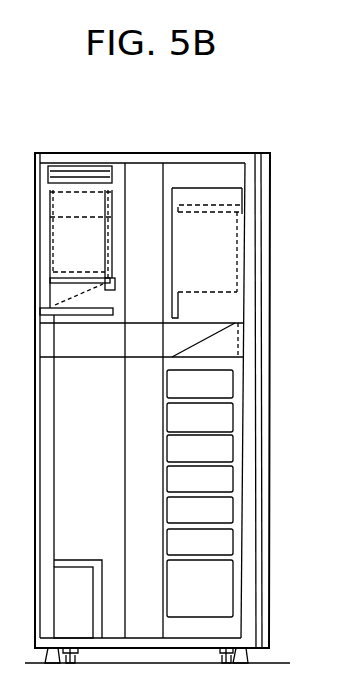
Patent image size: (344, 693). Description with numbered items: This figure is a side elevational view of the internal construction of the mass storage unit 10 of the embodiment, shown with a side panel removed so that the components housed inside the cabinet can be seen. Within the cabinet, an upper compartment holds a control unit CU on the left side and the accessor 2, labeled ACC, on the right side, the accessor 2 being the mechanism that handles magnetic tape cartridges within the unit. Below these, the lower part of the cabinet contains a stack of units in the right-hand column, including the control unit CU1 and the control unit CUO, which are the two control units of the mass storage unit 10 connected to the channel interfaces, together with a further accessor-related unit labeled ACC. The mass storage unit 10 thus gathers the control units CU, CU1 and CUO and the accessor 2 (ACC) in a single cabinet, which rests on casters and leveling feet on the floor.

The mass storage unit 10 is at (243, 151).
The accessor 2 is at (222, 236).
The control unit CU is at (77, 252).
The control unit CU1 is at (200, 431).
The control unit CUO is at (200, 526).
The accessor ACC is at (200, 588).